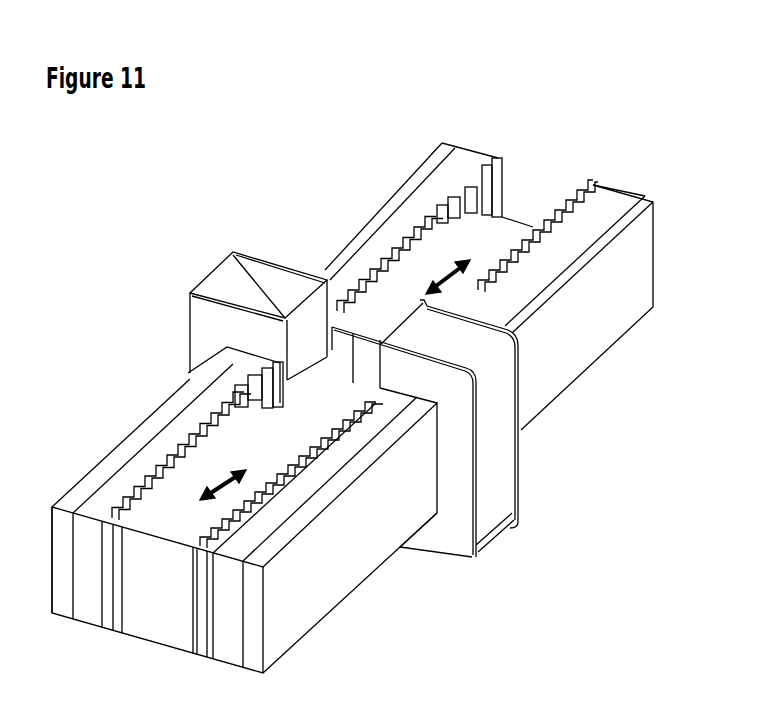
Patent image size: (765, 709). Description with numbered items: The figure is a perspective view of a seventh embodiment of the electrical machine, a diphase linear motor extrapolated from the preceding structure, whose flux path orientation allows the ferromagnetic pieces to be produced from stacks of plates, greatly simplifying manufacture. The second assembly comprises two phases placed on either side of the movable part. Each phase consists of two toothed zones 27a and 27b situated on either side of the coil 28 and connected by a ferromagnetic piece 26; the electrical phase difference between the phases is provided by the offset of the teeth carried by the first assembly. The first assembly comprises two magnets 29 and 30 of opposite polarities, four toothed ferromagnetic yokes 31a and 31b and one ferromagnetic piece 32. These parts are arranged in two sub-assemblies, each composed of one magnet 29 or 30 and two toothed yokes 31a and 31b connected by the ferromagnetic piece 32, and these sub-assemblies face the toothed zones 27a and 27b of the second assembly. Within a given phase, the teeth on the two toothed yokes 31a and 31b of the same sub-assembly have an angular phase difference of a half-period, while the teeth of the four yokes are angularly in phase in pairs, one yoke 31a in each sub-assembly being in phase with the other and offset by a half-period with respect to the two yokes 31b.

The ferromagnetic piece 26 is at (450, 154).
The toothed zone 27a is at (423, 211).
The toothed zone 27b is at (205, 408).
The coil 28 is at (493, 458).
The magnet 29 is at (460, 283).
The magnet 30 is at (163, 463).
The toothed ferromagnetic yoke 31a is at (200, 538).
The toothed ferromagnetic yoke 31b is at (277, 457).
The ferromagnetic piece 32 is at (283, 325).